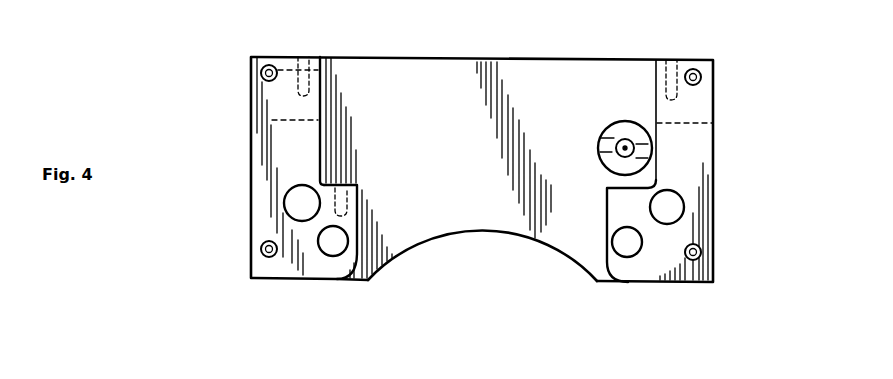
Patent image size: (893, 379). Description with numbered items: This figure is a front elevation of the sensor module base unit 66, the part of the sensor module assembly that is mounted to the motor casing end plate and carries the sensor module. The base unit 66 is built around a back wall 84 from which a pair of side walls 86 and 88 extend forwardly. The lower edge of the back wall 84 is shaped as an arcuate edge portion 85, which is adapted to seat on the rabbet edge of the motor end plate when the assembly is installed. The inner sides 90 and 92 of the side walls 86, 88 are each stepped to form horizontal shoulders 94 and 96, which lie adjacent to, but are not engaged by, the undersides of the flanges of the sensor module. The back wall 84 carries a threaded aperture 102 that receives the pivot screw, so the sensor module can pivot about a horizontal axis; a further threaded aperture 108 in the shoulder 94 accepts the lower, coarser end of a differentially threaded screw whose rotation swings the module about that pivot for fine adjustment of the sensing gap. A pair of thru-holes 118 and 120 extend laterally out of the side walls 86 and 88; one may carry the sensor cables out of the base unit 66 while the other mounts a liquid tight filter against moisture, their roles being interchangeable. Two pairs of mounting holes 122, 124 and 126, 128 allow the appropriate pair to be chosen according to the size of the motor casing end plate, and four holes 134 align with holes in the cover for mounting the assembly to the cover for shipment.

The sensor module base unit 66 is at (716, 143).
The back wall 84 is at (432, 58).
The arcuate edge portion 85 is at (452, 233).
The side wall 86 is at (250, 162).
The side wall 88 is at (715, 183).
The inner side 90 is at (321, 152).
The inner side 92 is at (657, 107).
The horizontal shoulder 94 is at (350, 184).
The horizontal shoulder 96 is at (605, 187).
The threaded aperture 102 is at (625, 148).
The threaded aperture 108 is at (349, 203).
The thru-hole 118 is at (280, 103).
The thru-hole 120 is at (690, 103).
The mounting hole 122 is at (331, 246).
The mounting hole 124 is at (625, 245).
The mounting hole 126 is at (290, 200).
The mounting hole 128 is at (682, 202).
The holes 134 is at (273, 65).